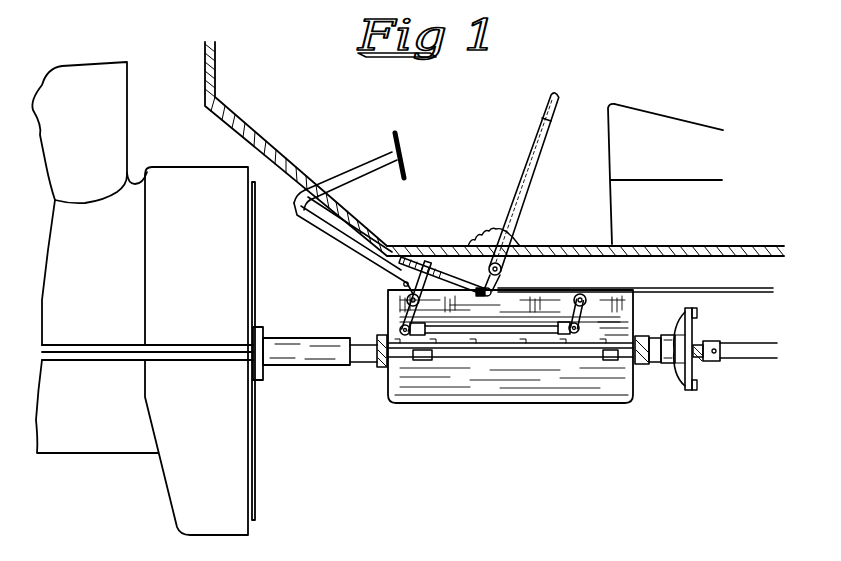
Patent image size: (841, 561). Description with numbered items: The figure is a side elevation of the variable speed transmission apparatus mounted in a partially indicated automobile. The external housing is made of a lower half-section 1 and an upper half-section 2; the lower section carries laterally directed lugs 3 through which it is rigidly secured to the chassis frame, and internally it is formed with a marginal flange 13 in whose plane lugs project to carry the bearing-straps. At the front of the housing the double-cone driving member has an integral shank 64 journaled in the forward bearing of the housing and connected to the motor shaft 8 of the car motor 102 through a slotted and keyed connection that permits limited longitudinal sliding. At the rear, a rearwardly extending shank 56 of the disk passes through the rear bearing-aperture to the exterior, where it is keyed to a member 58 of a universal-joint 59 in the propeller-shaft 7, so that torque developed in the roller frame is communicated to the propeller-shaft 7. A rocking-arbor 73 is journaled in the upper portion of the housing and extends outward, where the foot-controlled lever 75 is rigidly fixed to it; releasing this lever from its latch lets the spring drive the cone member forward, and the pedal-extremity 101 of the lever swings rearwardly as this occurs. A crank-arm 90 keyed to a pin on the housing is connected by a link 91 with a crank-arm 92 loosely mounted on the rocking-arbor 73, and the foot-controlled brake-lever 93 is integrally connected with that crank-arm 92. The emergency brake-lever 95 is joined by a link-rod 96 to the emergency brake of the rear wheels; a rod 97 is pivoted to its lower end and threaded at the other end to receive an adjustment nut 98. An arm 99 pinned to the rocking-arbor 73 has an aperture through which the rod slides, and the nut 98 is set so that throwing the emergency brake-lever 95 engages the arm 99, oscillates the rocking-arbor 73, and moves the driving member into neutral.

The lower half-section of external housing 1 is at (458, 392).
The upper half-section of external housing 2 is at (622, 328).
The laterally directed lugs 3 is at (430, 358).
The propeller-shaft 7 is at (746, 350).
The motor shaft 8 is at (312, 353).
The marginal flange 13 is at (518, 349).
The rearwardly extending shank 56 is at (663, 338).
The member of universal-joint 58 is at (680, 380).
The universal-joint 59 is at (706, 362).
The shank 64 is at (366, 363).
The rocking-arbor 73 is at (404, 304).
The foot-controlled lever 75 is at (347, 252).
The crank-arm 90 is at (583, 336).
The link 91 is at (542, 335).
The crank-arm 92 is at (399, 328).
The foot-controlled brake-lever 93 is at (333, 232).
The emergency brake-lever 95 is at (505, 283).
The link-rod 96 is at (578, 293).
The rod 97 is at (476, 280).
The adjustment nut 98 is at (426, 268).
The arm 99 is at (403, 284).
The pedal-extremity 101 is at (403, 168).
The car motor 102 is at (113, 141).